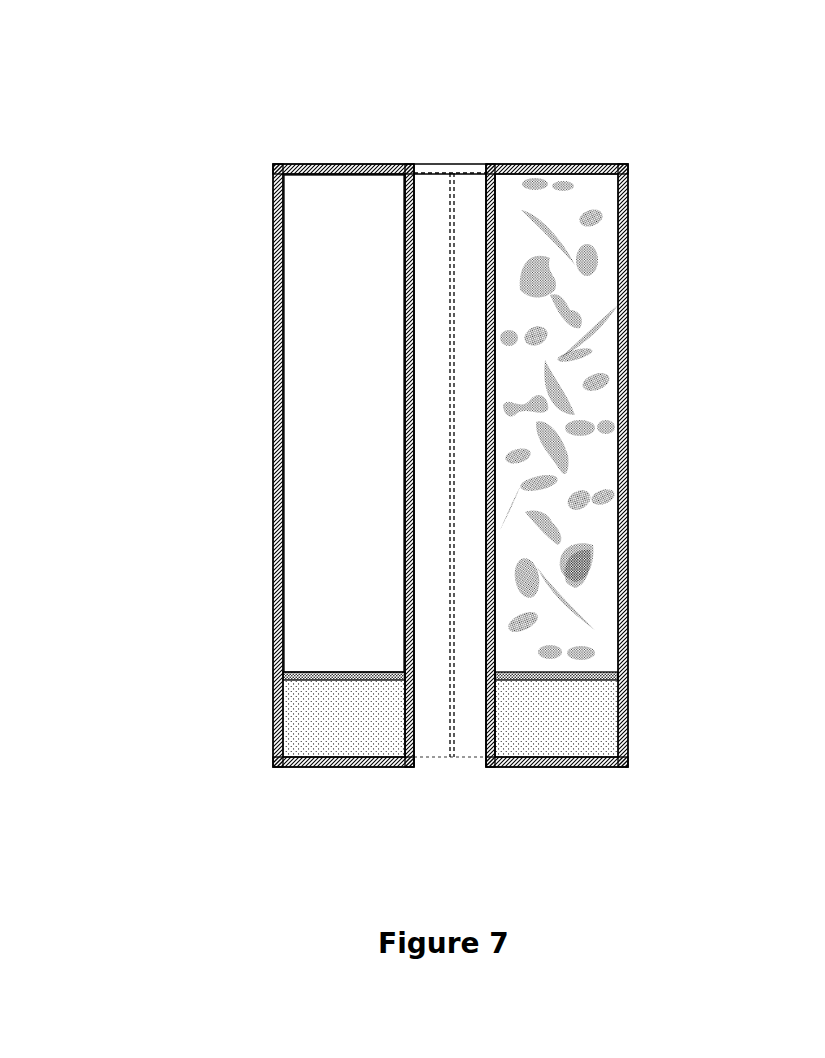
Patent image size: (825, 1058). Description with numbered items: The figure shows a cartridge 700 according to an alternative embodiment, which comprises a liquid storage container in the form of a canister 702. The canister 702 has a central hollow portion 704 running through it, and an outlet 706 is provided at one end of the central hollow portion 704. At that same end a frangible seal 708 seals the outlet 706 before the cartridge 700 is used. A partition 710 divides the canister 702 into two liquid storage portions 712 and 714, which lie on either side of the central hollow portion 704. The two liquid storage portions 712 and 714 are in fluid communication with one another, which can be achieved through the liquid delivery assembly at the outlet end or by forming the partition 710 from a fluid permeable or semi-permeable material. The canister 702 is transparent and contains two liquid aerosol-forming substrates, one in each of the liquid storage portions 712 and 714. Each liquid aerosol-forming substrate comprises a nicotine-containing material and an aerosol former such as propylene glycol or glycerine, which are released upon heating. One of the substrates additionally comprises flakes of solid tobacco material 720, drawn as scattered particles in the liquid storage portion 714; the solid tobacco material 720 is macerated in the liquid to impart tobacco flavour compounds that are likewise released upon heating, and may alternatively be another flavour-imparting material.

The cartridge 700 is at (221, 218).
The canister 702 is at (277, 427).
The central hollow portion 704 is at (432, 192).
The outlet 706 is at (440, 752).
The frangible seal 708 is at (468, 762).
The partition 710 is at (455, 203).
The liquid storage portion 712 is at (315, 627).
The liquid storage portion 714 is at (597, 287).
The flakes of solid tobacco material 720 is at (585, 567).